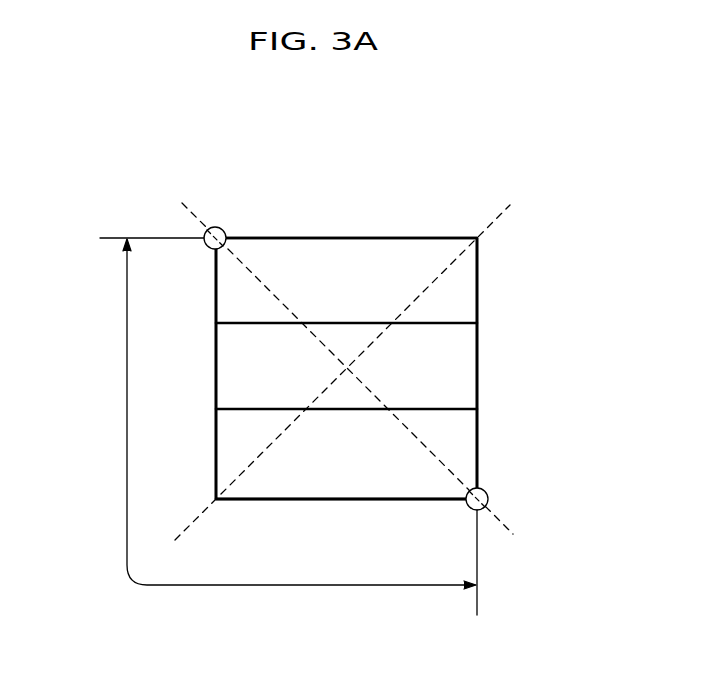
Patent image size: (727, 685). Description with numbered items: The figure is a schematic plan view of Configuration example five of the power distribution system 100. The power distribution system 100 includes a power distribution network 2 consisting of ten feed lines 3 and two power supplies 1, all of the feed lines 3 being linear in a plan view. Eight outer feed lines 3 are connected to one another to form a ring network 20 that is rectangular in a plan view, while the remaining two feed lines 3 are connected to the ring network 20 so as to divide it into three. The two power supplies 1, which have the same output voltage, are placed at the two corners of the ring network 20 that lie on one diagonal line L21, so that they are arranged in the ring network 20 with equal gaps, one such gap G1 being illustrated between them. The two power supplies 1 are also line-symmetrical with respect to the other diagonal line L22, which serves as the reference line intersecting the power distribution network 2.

The power distribution system 100 is at (348, 186).
The ring network 20 is at (415, 234).
The feed line 3 is at (347, 238).
The power distribution network 2 is at (275, 505).
The power supply 1 is at (222, 232).
The diagonal line L22 is at (490, 212).
The diagonal line L21 is at (441, 463).
The gap G1 is at (187, 586).